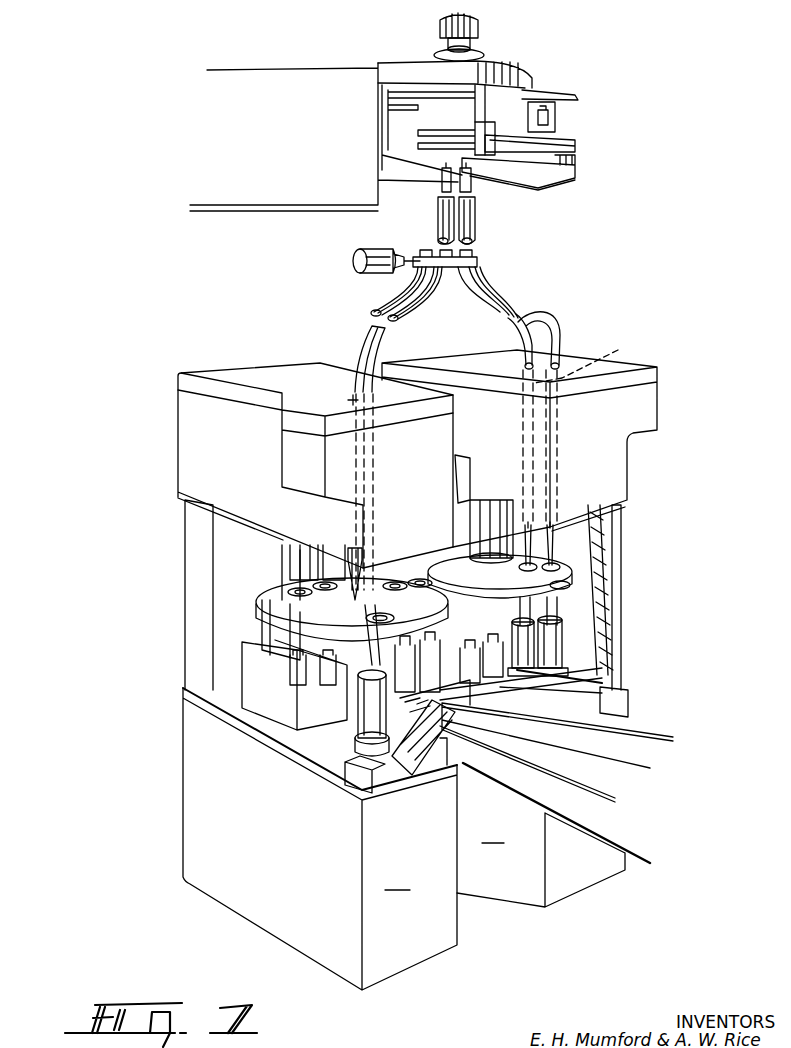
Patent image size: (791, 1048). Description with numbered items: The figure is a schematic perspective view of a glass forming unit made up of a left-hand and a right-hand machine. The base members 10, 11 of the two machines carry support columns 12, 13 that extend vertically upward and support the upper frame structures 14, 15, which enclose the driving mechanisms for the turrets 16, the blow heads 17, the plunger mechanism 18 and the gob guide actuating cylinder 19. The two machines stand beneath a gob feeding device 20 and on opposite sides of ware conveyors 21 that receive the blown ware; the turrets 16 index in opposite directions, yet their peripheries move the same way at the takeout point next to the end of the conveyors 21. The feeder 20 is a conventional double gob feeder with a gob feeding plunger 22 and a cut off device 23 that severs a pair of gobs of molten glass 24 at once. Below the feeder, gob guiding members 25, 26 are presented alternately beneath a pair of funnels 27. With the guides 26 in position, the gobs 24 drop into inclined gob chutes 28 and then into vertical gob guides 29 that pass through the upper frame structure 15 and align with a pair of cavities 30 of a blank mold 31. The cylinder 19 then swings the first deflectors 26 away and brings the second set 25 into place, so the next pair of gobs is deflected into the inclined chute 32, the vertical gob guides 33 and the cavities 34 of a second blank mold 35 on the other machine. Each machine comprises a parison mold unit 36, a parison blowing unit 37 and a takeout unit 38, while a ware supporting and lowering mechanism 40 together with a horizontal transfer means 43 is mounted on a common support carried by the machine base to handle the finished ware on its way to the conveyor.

The base member 10 is at (392, 830).
The base member 11 is at (541, 860).
The support column 12 is at (200, 652).
The support column 13 is at (605, 662).
The upper frame structure 14 is at (200, 470).
The upper frame structure 15 is at (635, 420).
The turret 16 is at (296, 598).
The blow head 17 is at (300, 590).
The plunger mechanism 18 is at (575, 556).
The gob guide actuating cylinder 19 is at (356, 256).
The gob feeding device 20 is at (600, 113).
The ware conveyor 21 is at (664, 730).
The gob feeding plunger 22 is at (478, 46).
The cut off device 23 is at (505, 162).
The gobs of molten glass 24 is at (472, 184).
The gob guiding member 25 is at (402, 280).
The gob guiding member 26 is at (487, 294).
The funnel 27 is at (456, 226).
The inclined gob chute 28 is at (556, 320).
The vertical gob guide 29 is at (589, 360).
The cavity 30 is at (560, 612).
The blank mold 31 is at (575, 671).
The inclined chute 32 is at (368, 345).
The vertical gob guide 33 is at (348, 402).
The cavity 34 is at (368, 652).
The second blank mold 35 is at (323, 738).
The parison mold unit 36 is at (602, 670).
The parison blowing unit 37 is at (233, 671).
The takeout unit 38 is at (437, 560).
The ware supporting and lowering mechanism 40 is at (560, 633).
The horizontal transfer means 43 is at (420, 705).